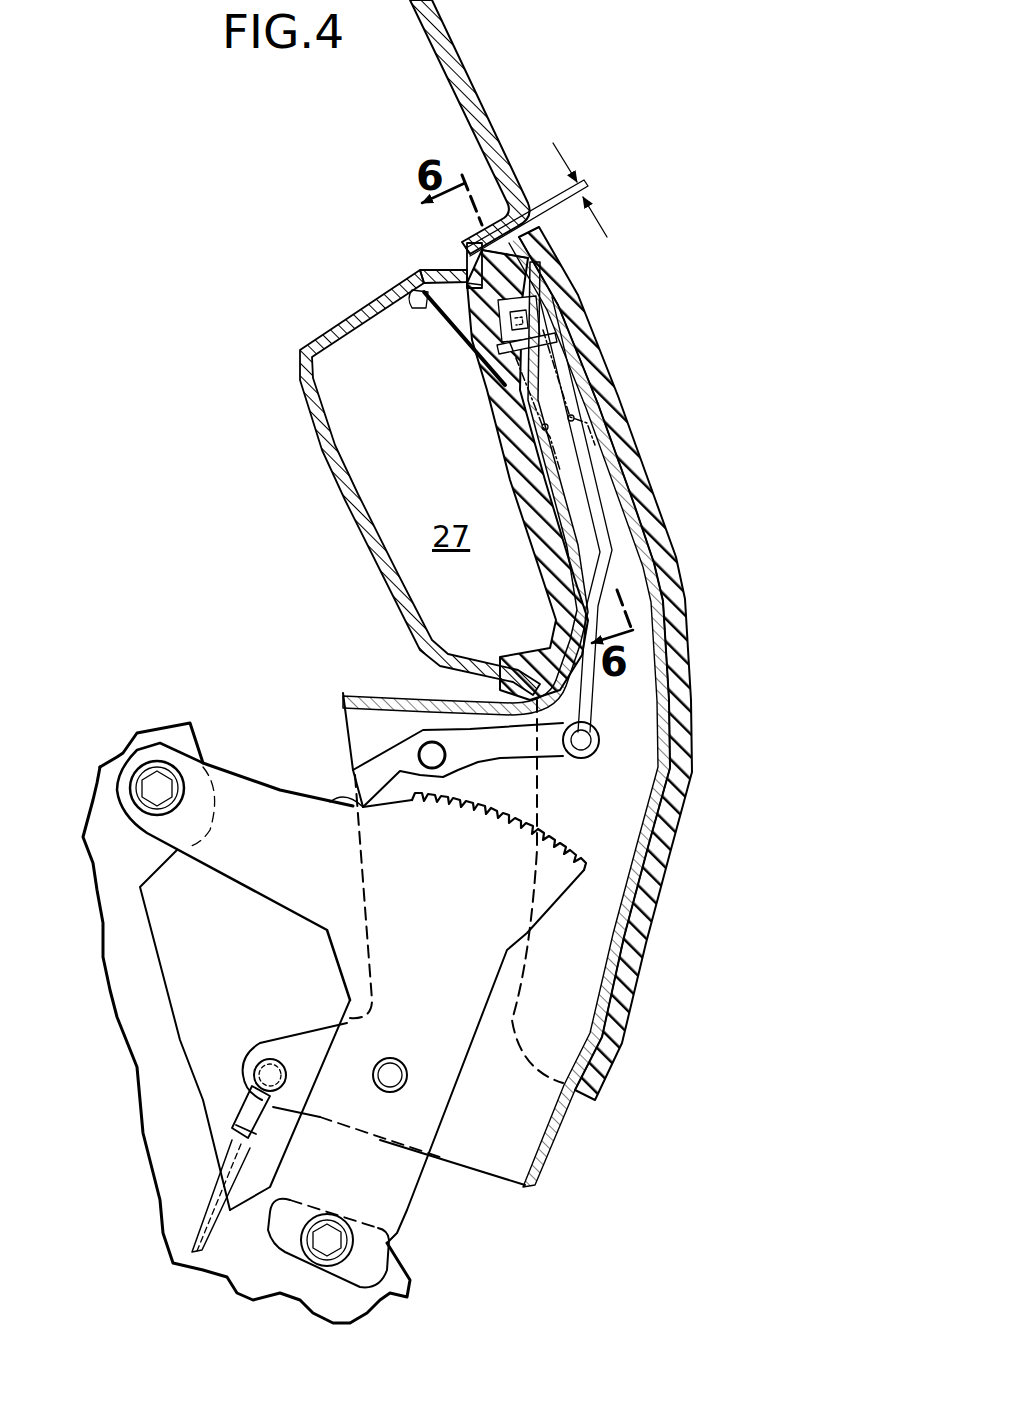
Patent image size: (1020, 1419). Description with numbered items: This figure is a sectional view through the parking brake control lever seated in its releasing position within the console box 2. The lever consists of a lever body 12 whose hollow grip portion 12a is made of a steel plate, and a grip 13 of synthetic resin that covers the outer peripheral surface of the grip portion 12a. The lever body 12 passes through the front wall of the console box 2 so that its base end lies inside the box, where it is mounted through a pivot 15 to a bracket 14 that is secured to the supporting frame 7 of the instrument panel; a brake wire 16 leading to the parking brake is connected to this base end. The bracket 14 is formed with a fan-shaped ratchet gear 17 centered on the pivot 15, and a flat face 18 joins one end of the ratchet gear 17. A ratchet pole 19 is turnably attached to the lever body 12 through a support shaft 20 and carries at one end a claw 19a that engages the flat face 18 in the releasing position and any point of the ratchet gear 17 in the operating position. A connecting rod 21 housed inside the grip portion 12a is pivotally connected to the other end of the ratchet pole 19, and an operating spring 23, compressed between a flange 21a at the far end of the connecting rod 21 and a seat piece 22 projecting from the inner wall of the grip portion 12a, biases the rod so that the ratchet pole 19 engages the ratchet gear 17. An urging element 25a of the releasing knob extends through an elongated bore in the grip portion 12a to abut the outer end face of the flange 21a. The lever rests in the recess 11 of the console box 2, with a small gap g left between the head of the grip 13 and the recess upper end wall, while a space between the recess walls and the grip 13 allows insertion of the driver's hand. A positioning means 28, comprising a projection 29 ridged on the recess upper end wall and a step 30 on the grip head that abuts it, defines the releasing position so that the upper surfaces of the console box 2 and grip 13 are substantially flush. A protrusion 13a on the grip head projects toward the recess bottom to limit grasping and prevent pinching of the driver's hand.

The console box 2 is at (500, 134).
The gap g is at (587, 183).
The supporting frame 7 is at (103, 807).
The recess 11 is at (345, 458).
The lever body 12 is at (627, 855).
The grip portion 12a is at (580, 373).
The grip 13 is at (563, 300).
The protrusion 13a is at (420, 306).
The bracket 14 is at (407, 990).
The pivot 15 is at (400, 1077).
The brake wire 16 is at (208, 1225).
The ratchet gear 17 is at (525, 822).
The flat face 18 is at (402, 805).
The ratchet pole 19 is at (497, 752).
The claw 19a is at (340, 787).
The support shaft 20 is at (430, 742).
The connecting rod 21 is at (597, 523).
The flange 21a is at (510, 330).
The seat piece 22 is at (590, 410).
The operating spring 23 is at (517, 427).
The urging element 25a is at (450, 318).
The positioning means 28 is at (296, 285).
The projection 29 is at (467, 240).
The step 30 is at (467, 262).